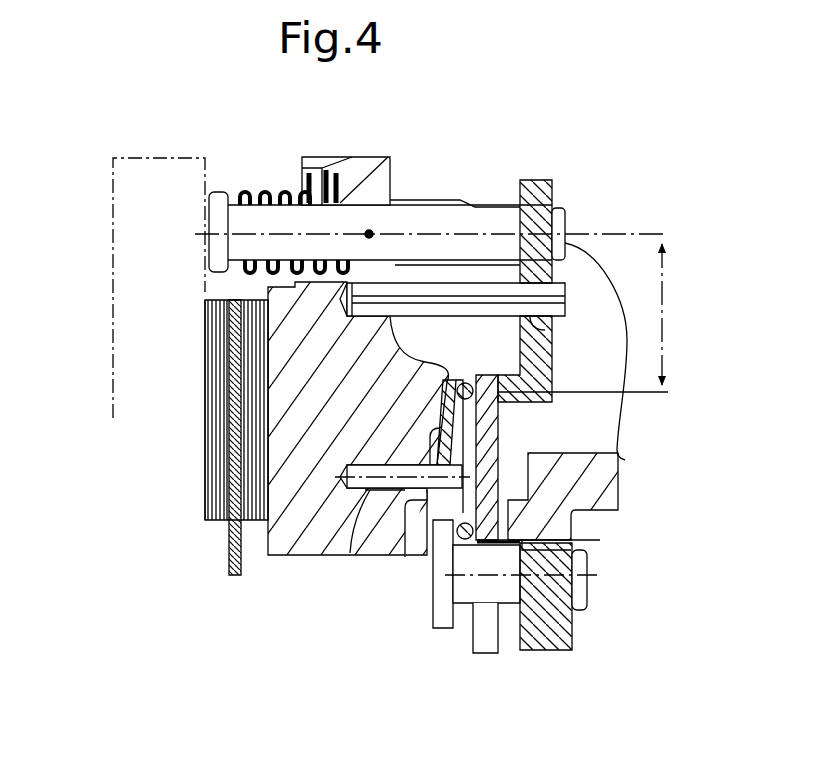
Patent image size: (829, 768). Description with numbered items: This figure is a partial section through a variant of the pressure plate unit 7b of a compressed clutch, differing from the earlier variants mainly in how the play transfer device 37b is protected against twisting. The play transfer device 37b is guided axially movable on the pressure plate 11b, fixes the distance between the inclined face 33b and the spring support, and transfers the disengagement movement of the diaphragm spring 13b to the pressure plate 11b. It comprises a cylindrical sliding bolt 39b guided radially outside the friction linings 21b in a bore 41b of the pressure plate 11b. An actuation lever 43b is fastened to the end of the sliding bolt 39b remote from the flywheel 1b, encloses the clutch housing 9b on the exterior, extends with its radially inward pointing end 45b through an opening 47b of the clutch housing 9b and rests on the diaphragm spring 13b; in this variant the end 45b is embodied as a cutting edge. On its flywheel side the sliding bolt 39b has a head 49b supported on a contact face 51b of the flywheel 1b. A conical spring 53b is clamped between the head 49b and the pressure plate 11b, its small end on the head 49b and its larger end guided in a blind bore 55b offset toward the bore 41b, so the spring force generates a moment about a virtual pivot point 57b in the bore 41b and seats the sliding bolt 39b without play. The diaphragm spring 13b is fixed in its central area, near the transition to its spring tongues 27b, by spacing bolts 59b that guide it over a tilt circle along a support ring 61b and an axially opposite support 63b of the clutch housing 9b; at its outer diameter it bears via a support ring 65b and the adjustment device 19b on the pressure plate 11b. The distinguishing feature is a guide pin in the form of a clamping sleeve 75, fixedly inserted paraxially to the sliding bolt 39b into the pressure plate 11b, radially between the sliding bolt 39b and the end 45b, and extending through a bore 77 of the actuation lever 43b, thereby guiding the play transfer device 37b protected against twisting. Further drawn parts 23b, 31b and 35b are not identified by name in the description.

The flywheel 1b is at (113, 235).
The pressure plate unit 7b is at (627, 156).
The clutch housing 9b is at (605, 483).
The pressure plate 11b is at (285, 552).
The diaphragm spring 13b is at (490, 441).
The adjustment device 19b is at (437, 398).
The friction linings 21b is at (220, 482).
The plate 23b is at (226, 550).
The spring tongues 27b is at (475, 640).
The disk 31b is at (443, 414).
The inclined face 33b is at (432, 364).
The lower section 35b is at (350, 548).
The play transfer device 37b is at (491, 184).
The sliding bolt 39b is at (418, 222).
The bore 41b is at (350, 177).
The actuation lever 43b is at (522, 180).
The end of the actuation lever 45b is at (507, 422).
The opening 47b is at (592, 368).
The head 49b is at (200, 220).
The contact face 51b is at (213, 178).
The conical spring 53b is at (275, 200).
The blind bore 55b is at (298, 283).
The virtual pivot point 57b is at (369, 230).
The spacing bolts 59b is at (558, 620).
The support ring 61b is at (465, 545).
The support 63b is at (500, 533).
The support ring 65b is at (466, 383).
The clamping sleeve 75 is at (567, 292).
The bore 77 is at (560, 331).